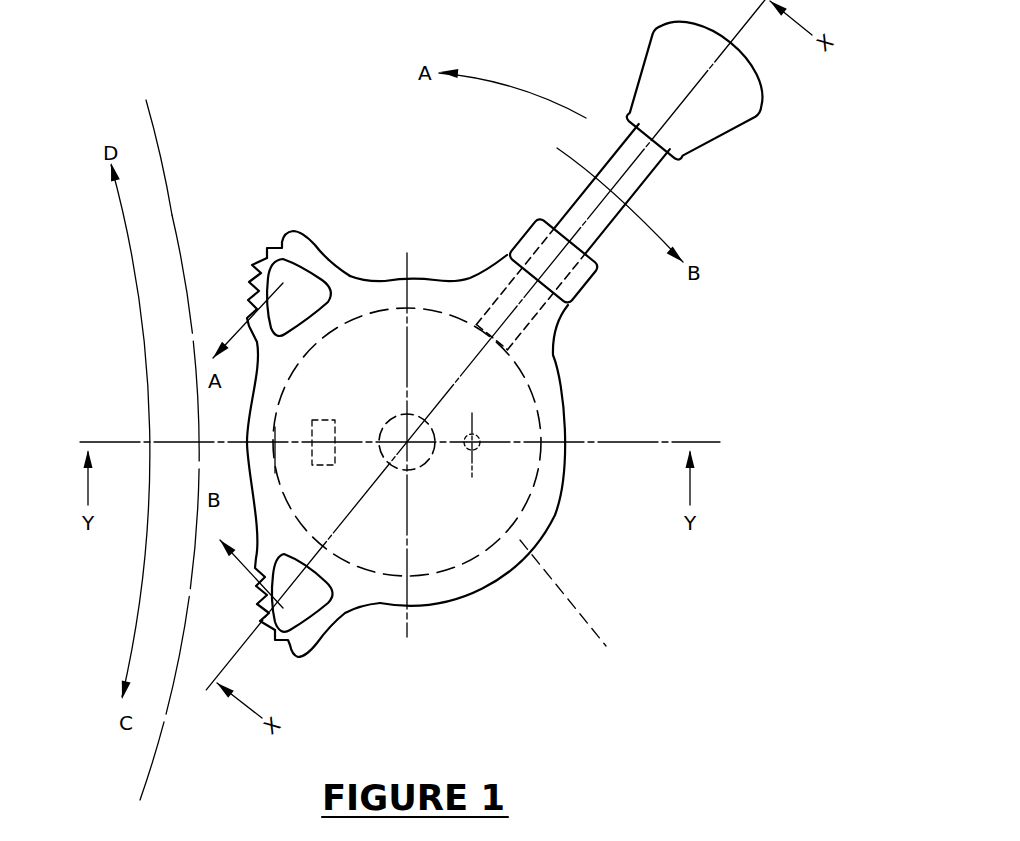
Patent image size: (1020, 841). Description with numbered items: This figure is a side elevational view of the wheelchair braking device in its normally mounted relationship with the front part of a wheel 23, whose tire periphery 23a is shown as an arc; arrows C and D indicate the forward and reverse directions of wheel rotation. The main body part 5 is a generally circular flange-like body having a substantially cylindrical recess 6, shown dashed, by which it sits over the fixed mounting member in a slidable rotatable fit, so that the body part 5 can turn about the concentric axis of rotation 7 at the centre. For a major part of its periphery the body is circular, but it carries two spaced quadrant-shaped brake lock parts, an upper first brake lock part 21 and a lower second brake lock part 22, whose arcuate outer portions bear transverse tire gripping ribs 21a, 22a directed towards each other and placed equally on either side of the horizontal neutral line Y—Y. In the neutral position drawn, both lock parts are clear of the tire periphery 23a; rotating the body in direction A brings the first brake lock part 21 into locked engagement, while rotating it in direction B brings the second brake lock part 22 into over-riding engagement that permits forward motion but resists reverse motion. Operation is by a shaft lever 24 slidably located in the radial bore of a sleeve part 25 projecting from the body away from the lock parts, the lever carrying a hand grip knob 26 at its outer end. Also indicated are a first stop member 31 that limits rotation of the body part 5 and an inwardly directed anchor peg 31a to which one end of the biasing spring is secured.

The main body part 5 is at (444, 430).
The cylindrical recess 6 is at (530, 390).
The axis of rotation 7 is at (488, 571).
The first brake lock part 21 is at (336, 266).
The tire gripping ribs 21a is at (333, 243).
The second brake lock part 22 is at (339, 610).
The tire gripping ribs 22a is at (336, 627).
The wheel 23 is at (145, 507).
The tire periphery 23a is at (198, 156).
The shaft lever 24 is at (648, 189).
The sleeve part 25 is at (570, 289).
The hand grip knob 26 is at (701, 91).
The first stop member 31 is at (330, 426).
The anchor peg 31a is at (598, 648).